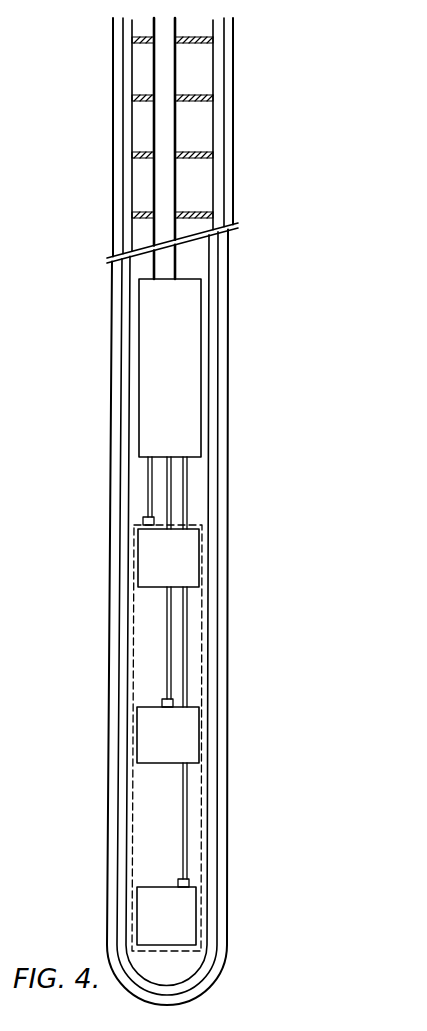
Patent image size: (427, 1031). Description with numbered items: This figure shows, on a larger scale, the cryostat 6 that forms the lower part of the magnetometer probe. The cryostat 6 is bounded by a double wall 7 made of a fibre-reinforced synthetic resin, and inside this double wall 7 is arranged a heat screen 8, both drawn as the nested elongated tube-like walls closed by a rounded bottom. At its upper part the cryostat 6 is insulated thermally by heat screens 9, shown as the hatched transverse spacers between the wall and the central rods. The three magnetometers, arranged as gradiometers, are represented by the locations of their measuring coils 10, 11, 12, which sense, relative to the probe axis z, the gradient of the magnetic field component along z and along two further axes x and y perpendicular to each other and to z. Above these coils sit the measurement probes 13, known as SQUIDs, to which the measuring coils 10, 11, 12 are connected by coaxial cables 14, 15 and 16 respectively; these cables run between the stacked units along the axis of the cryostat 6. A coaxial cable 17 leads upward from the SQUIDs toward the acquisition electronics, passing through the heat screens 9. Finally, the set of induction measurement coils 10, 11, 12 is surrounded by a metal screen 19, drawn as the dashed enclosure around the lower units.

The cryostat 6 is at (140, 500).
The double wall 7 is at (205, 467).
The heat screen 8 is at (220, 637).
The heat screens 9 is at (146, 43).
The measuring coil 10 is at (188, 913).
The measuring coil 11 is at (188, 735).
The measuring coil 12 is at (147, 547).
The measurement probes 13 is at (192, 329).
The coaxial cable 14 is at (187, 817).
The coaxial cable 15 is at (167, 630).
The coaxial cable 16 is at (148, 473).
The coaxial cable 17 is at (170, 70).
The metal screen 19 is at (132, 847).